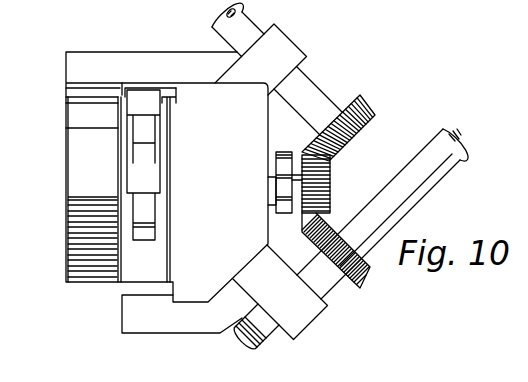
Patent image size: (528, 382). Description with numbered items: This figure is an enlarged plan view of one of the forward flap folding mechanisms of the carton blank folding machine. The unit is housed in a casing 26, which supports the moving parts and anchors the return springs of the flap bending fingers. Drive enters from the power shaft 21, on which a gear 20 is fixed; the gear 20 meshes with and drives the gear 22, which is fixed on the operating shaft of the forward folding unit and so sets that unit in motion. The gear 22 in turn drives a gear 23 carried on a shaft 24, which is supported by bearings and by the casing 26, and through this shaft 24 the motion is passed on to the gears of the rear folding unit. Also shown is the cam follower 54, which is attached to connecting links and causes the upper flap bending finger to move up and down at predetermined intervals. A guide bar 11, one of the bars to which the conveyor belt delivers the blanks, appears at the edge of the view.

The casing 26 is at (67, 70).
The shaft 24 is at (311, 82).
The gear 23 is at (367, 102).
The gear 22 is at (329, 188).
The power shaft 21 is at (450, 173).
The gear 20 is at (353, 291).
The cam follower 54 is at (134, 381).
The guide bar 11 is at (150, 377).